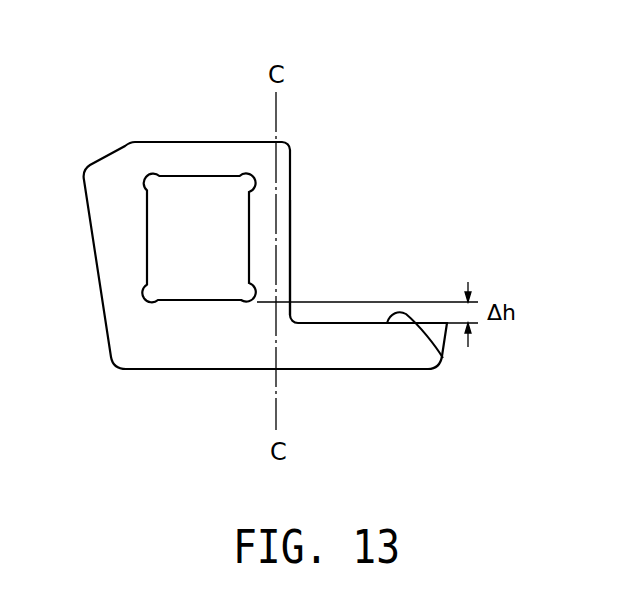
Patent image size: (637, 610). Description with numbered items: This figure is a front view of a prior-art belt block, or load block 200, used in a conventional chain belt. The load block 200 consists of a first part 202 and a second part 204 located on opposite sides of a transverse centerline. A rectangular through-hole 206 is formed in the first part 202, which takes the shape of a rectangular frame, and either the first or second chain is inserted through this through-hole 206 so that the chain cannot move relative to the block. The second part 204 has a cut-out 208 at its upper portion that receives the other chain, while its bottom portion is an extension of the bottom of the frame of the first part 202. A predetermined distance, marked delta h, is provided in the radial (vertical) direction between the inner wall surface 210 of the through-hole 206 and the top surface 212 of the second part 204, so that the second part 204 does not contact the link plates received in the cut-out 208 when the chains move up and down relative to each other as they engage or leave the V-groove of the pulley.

The load block 200 is at (82, 108).
The first part 202 is at (272, 382).
The second part 204 is at (437, 382).
The rectangular through-hole 206 is at (208, 176).
The cut-out 208 is at (291, 271).
The inner wall surface 210 is at (205, 300).
The top surface 212 is at (443, 358).